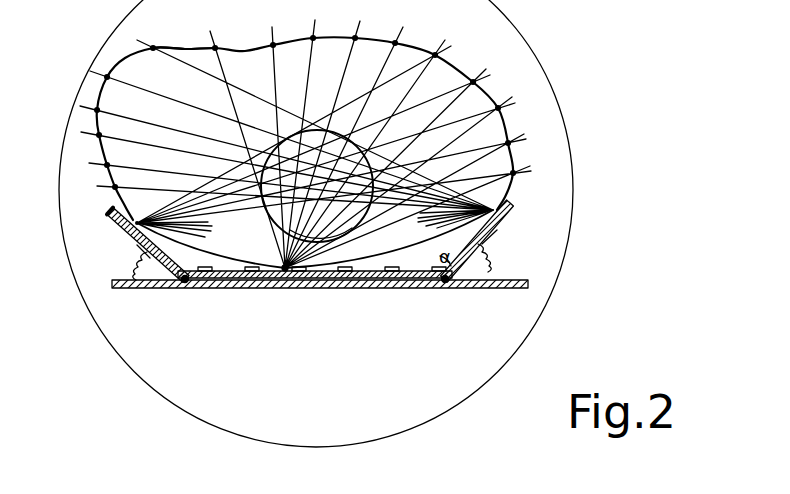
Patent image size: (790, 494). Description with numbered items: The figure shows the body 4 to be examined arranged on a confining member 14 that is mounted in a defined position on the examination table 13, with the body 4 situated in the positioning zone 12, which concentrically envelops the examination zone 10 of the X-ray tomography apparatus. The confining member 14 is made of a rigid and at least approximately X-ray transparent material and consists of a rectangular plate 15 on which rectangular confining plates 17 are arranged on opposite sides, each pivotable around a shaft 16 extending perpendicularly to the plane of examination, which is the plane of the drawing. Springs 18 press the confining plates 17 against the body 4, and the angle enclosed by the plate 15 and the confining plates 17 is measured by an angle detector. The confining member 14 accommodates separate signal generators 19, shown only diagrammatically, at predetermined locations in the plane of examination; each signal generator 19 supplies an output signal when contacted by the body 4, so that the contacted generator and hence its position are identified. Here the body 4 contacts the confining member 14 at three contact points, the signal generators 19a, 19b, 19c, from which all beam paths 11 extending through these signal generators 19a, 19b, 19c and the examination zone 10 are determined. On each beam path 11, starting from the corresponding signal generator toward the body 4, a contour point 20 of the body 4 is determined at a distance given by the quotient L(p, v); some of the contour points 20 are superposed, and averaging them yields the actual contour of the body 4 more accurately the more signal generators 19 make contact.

The body to be examined 4 is at (244, 50).
The examination zone 10 is at (354, 225).
The beam paths 11 is at (342, 92).
The positioning zone 12 is at (522, 333).
The examination table 13 is at (502, 290).
The confining member 14 is at (88, 203).
The rectangular plate 15 is at (405, 270).
The shaft 16 is at (443, 288).
The confining plates 17 is at (497, 230).
The springs 18 is at (487, 267).
The signal generators 19 is at (228, 268).
The signal generator 19a is at (130, 228).
The signal generator 19b is at (285, 280).
The signal generator 19c is at (507, 212).
The contour point 20 is at (210, 48).